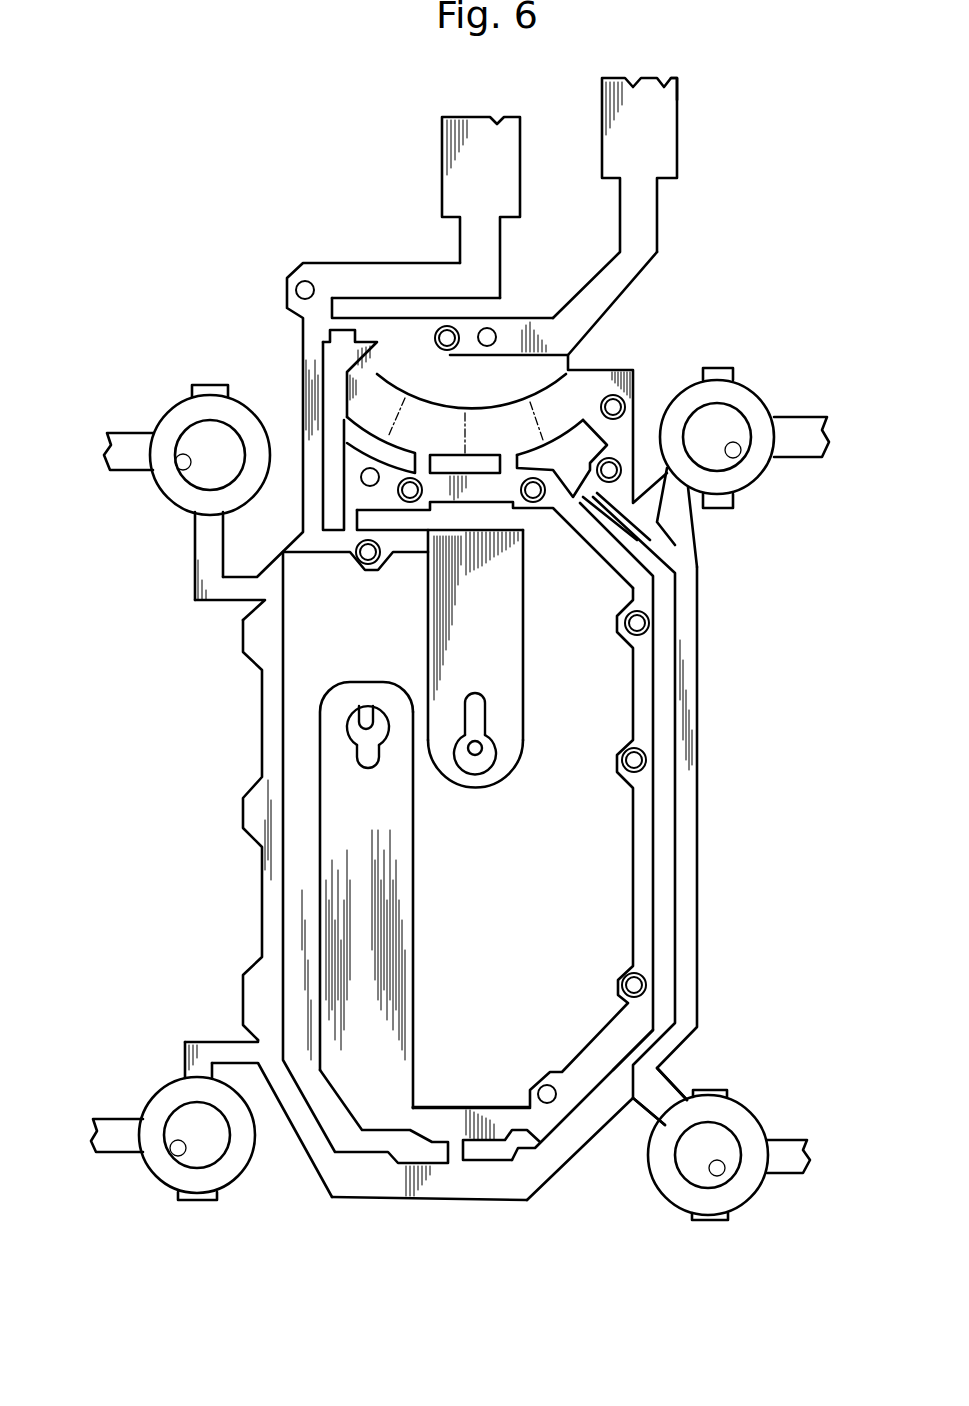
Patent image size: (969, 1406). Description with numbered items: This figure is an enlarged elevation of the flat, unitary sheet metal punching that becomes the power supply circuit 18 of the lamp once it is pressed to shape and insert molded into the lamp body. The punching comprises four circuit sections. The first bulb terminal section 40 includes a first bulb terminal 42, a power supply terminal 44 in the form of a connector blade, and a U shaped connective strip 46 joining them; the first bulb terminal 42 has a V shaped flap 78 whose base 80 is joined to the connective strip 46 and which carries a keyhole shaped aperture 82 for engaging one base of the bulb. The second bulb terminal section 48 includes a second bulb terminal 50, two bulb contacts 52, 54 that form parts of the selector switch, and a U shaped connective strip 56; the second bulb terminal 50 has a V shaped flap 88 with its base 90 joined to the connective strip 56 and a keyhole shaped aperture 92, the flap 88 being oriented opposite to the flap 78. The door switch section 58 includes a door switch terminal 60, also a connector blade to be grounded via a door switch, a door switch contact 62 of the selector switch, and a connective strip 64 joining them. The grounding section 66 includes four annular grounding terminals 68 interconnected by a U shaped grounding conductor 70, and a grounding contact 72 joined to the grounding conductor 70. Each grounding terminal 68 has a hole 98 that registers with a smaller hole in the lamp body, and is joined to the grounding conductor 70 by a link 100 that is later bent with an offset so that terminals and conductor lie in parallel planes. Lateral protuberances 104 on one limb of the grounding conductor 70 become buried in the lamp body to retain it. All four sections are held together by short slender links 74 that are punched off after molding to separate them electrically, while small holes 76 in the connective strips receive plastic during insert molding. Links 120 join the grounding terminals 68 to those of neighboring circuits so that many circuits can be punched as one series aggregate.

The power supply circuit 18 is at (229, 238).
The first bulb terminal section 40 is at (533, 776).
The first bulb terminal 42 is at (530, 703).
The power supply terminal 44 is at (508, 183).
The U shaped connective strip 46 is at (303, 423).
The second bulb terminal section 48 is at (465, 955).
The second bulb terminal 50 is at (414, 933).
The bulb contact 52 is at (513, 427).
The bulb contact 54 is at (423, 423).
The U shaped connective strip 56 is at (520, 1188).
The door switch section 58 is at (681, 92).
The door switch terminal 60 is at (664, 157).
The door switch contact 62 is at (387, 358).
The connective strip 64 is at (425, 330).
The grounding section 66 is at (580, 1168).
The annular grounding terminals 68 is at (195, 545).
The grounding conductor 70 is at (697, 732).
The grounding contact 72 is at (570, 403).
The links 74 is at (345, 320).
The small holes 76 is at (448, 345).
The V shaped flap 78 is at (532, 656).
The base 80 is at (493, 600).
The keyhole shaped aperture 82 is at (472, 755).
The V shaped flap 88 is at (340, 870).
The base 90 is at (415, 1025).
The keyhole shaped aperture 92 is at (362, 708).
The holes 98 is at (183, 466).
The links 100 is at (200, 575).
The lateral protuberances 104 is at (240, 640).
The links 120 is at (130, 440).